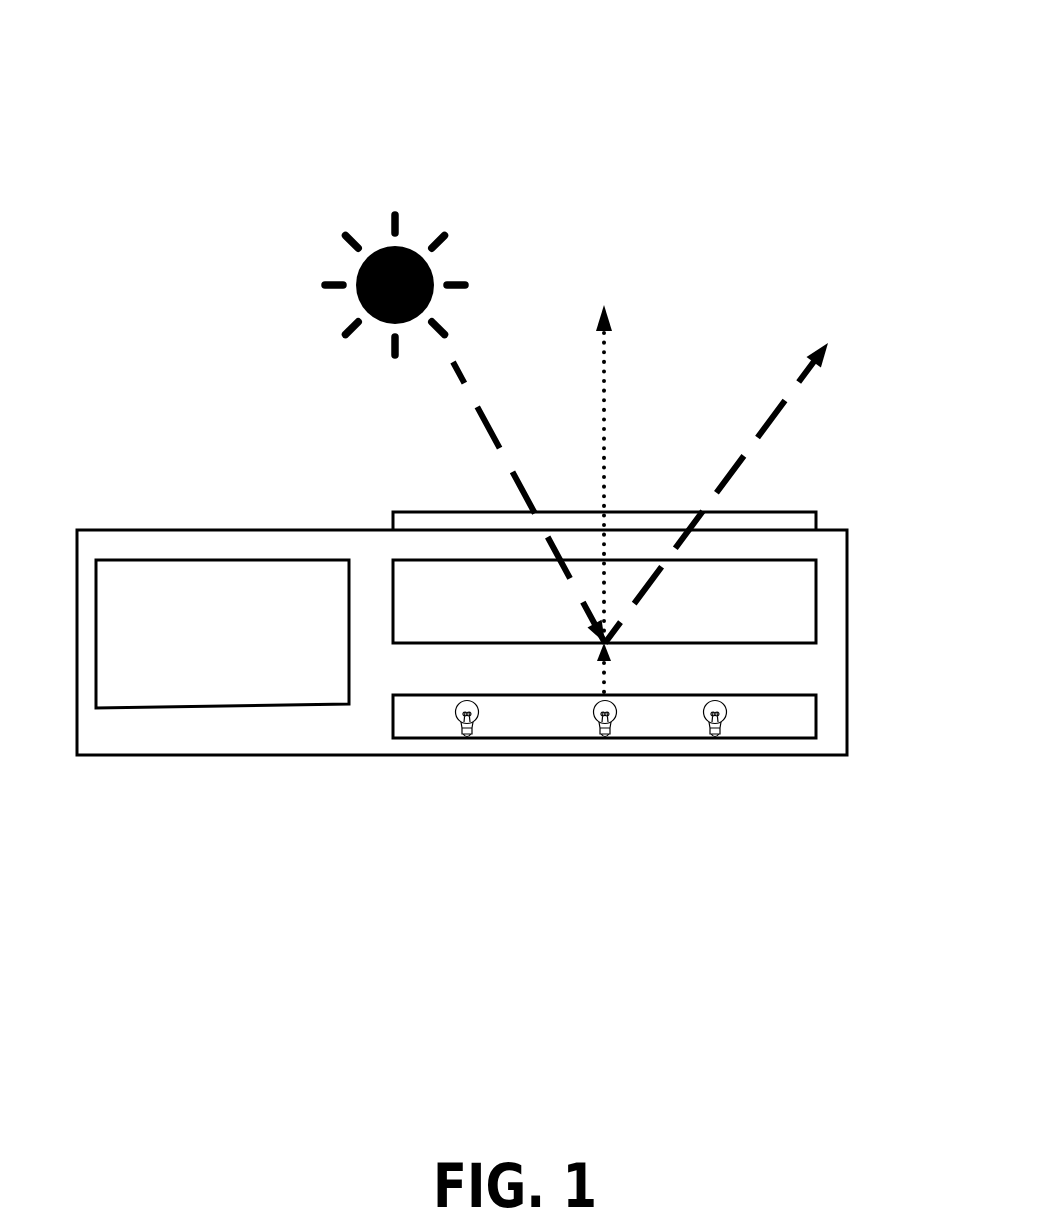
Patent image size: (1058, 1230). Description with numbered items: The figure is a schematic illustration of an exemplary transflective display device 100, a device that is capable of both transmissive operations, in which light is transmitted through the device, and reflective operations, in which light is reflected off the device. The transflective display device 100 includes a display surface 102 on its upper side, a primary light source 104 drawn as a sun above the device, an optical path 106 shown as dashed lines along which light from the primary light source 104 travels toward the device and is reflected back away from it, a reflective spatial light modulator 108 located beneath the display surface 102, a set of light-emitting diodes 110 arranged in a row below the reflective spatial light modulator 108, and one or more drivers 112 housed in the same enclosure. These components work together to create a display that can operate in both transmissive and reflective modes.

The transflective display device 100 is at (771, 78).
The display surface 102 is at (780, 502).
The primary light source 104 is at (451, 200).
The optical path 106 is at (482, 417).
The reflective spatial light modulator 108 is at (604, 601).
The set of light-emitting diodes (LEDs) 110 is at (820, 715).
The drivers 112 is at (222, 634).